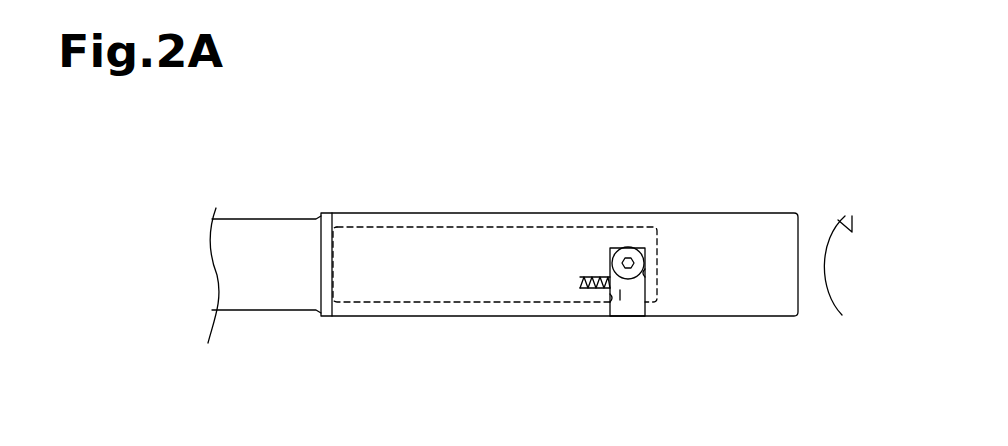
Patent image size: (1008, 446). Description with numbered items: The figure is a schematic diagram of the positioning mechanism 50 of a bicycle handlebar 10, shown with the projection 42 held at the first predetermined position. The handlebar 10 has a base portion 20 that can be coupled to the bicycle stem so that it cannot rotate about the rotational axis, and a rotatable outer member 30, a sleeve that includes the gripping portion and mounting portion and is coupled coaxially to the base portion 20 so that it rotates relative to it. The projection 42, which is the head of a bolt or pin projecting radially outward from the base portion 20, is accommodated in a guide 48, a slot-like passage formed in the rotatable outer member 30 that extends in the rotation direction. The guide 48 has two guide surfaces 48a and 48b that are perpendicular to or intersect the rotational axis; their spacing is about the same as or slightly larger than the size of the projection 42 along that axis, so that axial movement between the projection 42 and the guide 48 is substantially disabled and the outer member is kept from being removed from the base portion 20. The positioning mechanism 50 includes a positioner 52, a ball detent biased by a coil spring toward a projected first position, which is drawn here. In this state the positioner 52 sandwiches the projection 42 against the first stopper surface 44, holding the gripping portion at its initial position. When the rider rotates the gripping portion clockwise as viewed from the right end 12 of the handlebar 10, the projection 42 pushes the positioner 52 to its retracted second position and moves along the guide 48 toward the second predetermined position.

The handlebar 10 is at (305, 133).
The right end 12 is at (798, 223).
The base portion 20 is at (264, 236).
The rotatable outer member 30 is at (363, 226).
The projection 42 is at (612, 256).
The first stopper surface 44 is at (628, 248).
The guide 48 is at (636, 292).
The guide surface 48a is at (645, 273).
The guide surface 48b is at (612, 298).
The positioning mechanism 50 is at (566, 343).
The positioner 52 is at (620, 300).